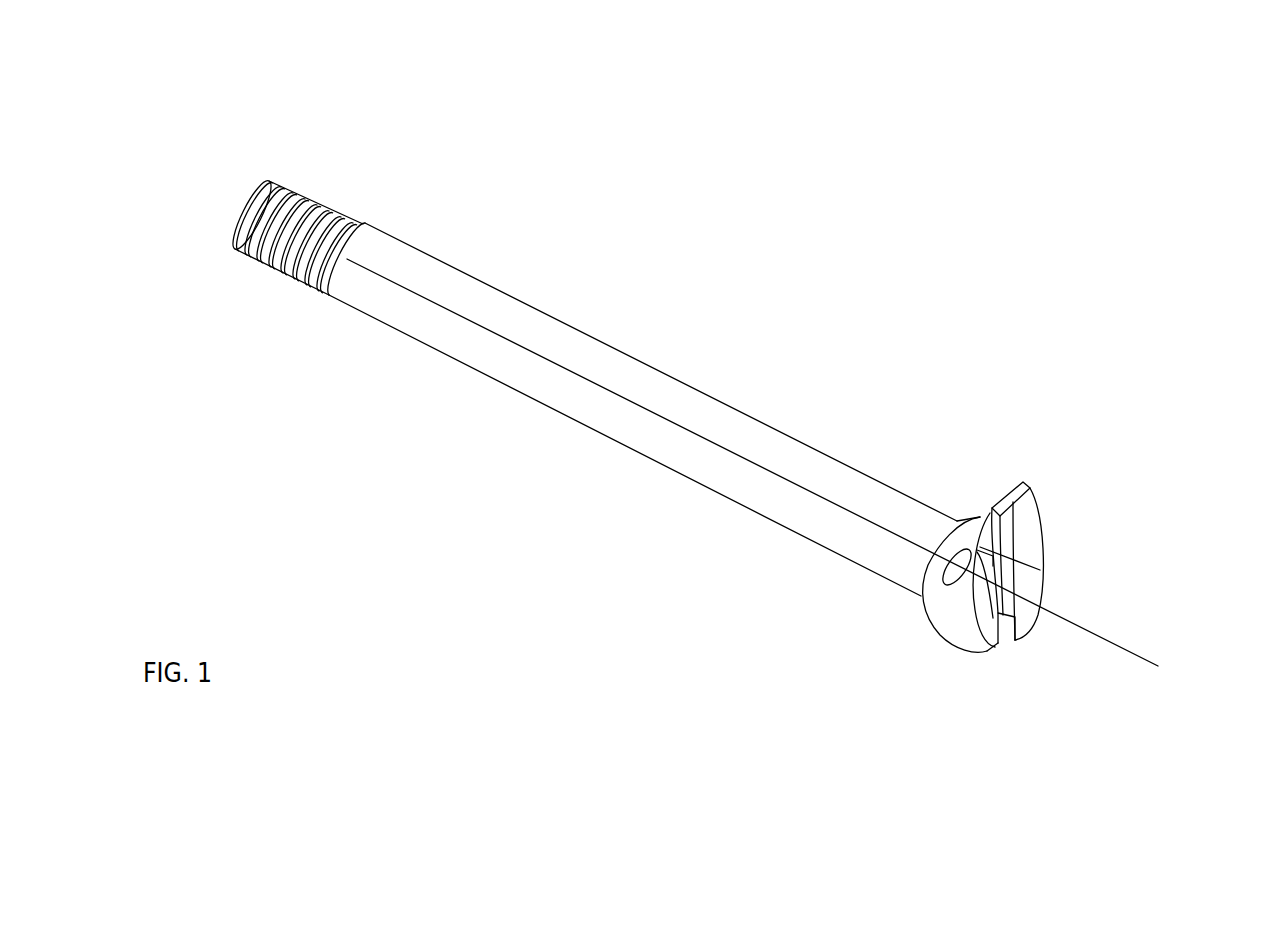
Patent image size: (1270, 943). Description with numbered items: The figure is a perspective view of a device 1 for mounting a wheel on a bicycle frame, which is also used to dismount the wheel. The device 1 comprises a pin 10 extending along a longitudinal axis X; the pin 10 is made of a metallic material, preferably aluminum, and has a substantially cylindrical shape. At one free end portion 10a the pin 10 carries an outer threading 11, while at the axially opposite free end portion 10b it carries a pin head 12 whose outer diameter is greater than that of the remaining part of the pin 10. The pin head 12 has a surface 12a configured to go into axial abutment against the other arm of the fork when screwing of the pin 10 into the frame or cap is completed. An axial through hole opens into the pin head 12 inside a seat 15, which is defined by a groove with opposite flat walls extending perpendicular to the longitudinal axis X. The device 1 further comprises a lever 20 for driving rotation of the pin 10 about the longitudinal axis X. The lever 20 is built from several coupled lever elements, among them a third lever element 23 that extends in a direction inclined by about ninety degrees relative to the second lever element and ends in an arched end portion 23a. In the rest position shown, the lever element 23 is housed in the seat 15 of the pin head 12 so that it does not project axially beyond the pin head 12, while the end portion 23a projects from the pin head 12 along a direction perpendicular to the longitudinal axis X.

The device for mounting a wheel on a bicycle frame 1 is at (947, 243).
The pin 10 is at (709, 397).
The free end portion 10a is at (306, 170).
The free end portion 10b is at (987, 486).
The outer threading 11 is at (341, 200).
The pin head 12 is at (947, 628).
The surface 12a is at (923, 602).
The seat 15 is at (1008, 648).
The lever 20 is at (1050, 522).
The third lever element 23 is at (1035, 585).
The arched end portion 23a is at (1017, 492).
The longitudinal axis X is at (1107, 638).